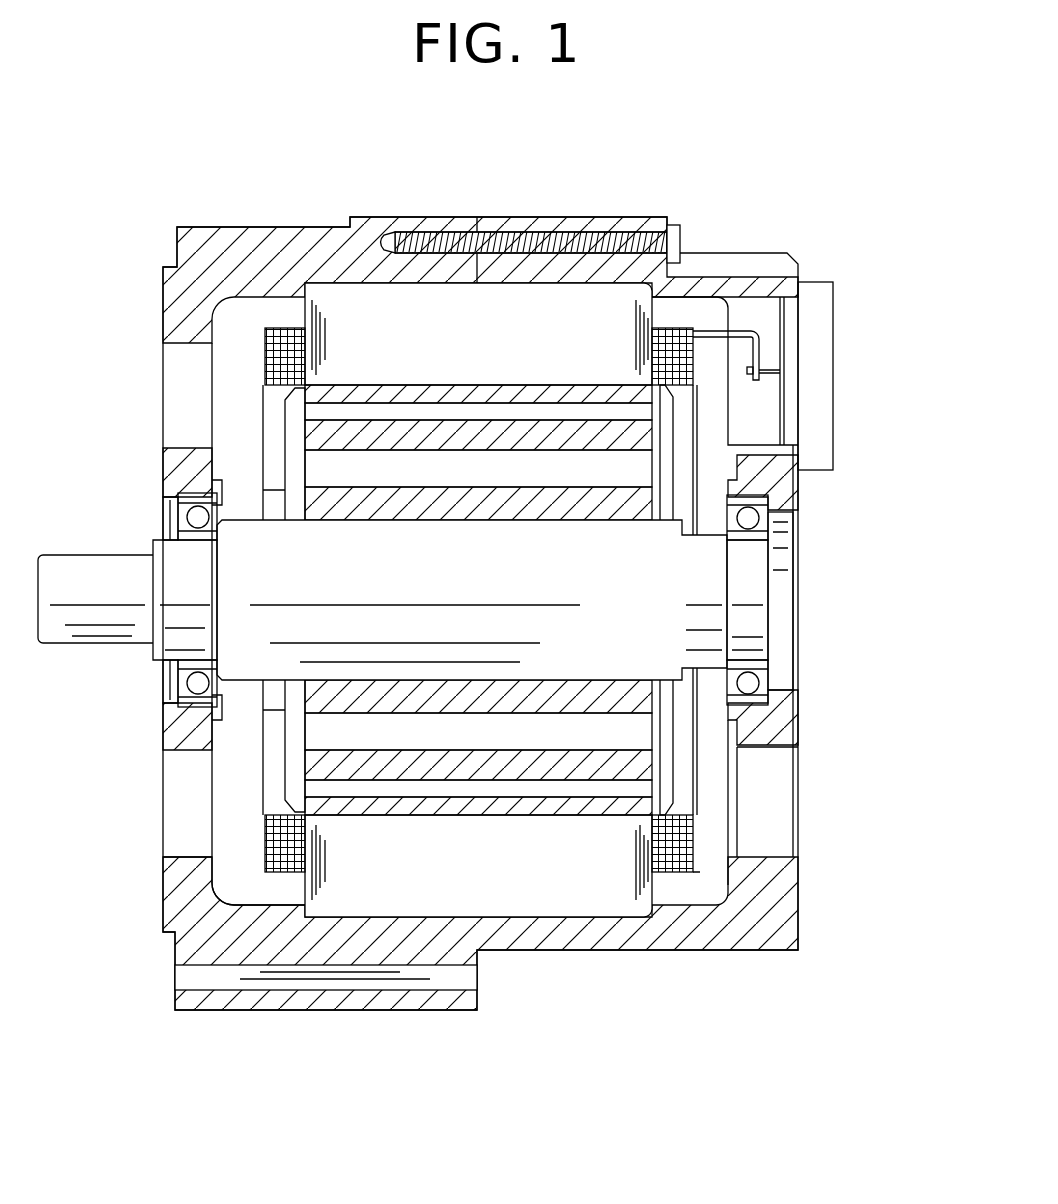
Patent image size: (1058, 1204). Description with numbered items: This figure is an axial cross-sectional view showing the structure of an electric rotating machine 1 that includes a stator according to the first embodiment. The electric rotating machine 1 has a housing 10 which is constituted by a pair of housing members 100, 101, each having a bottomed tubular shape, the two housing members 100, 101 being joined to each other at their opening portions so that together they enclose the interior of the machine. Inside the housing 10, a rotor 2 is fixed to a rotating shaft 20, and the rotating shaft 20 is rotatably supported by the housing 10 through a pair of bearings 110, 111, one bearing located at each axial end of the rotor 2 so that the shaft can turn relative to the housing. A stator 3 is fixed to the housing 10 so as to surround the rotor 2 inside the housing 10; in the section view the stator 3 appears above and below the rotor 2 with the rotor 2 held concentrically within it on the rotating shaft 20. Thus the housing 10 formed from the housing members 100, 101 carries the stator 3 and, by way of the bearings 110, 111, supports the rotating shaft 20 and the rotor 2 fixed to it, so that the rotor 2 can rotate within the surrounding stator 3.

The electric rotating machine 1 is at (878, 240).
The rotor 2 is at (642, 437).
The stator 3 is at (617, 310).
The housing 10 is at (531, 193).
The housing member 100 is at (422, 222).
The housing member 101 is at (507, 223).
The rotating shaft 20 is at (100, 626).
The bearing 110 is at (176, 507).
The bearing 111 is at (764, 504).